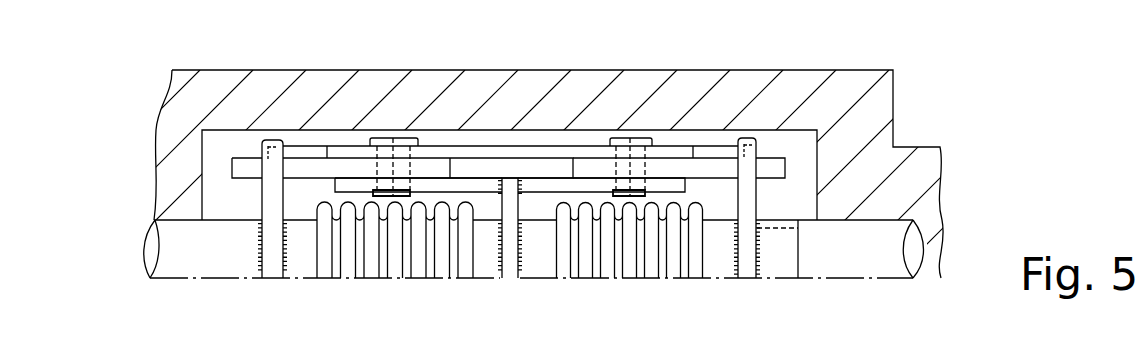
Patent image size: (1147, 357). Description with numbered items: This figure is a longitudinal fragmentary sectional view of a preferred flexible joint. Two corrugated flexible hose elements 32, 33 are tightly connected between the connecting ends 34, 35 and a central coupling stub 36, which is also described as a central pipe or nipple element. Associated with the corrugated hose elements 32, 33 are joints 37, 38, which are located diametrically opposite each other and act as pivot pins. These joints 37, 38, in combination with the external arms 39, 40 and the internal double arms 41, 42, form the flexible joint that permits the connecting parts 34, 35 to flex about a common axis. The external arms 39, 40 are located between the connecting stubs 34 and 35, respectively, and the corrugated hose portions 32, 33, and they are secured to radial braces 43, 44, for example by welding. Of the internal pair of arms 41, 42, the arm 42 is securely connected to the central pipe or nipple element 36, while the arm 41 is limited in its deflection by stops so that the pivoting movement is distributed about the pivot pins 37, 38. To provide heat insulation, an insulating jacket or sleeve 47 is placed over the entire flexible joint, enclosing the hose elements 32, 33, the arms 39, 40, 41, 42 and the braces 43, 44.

The flexible hose element 32 is at (370, 268).
The flexible hose element 33 is at (626, 252).
The connecting end 34 is at (213, 258).
The connecting end 35 is at (832, 252).
The central coupling stub 36 is at (540, 255).
The joint 37 is at (374, 136).
The joint 38 is at (654, 138).
The external arm 39 is at (718, 168).
The external arm 40 is at (324, 170).
The internal double arm 41 is at (458, 150).
The internal double arm 42 is at (558, 178).
The radial brace 43 is at (265, 204).
The radial brace 44 is at (755, 196).
The insulating jacket 47 is at (200, 118).